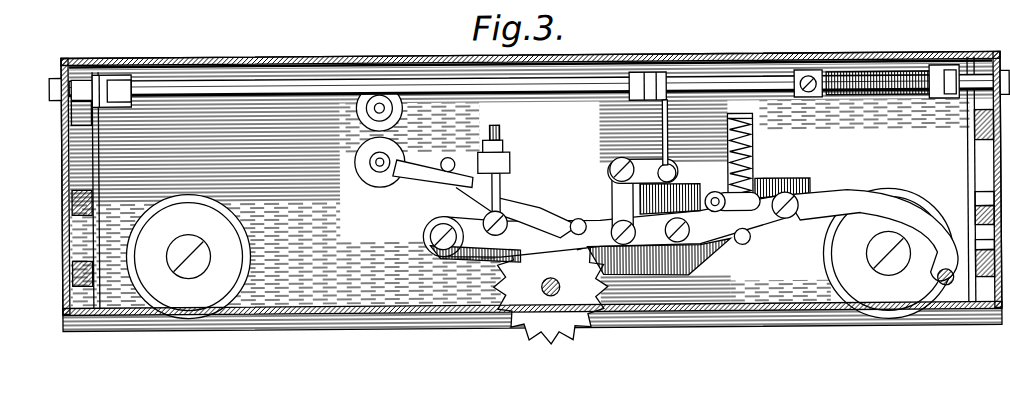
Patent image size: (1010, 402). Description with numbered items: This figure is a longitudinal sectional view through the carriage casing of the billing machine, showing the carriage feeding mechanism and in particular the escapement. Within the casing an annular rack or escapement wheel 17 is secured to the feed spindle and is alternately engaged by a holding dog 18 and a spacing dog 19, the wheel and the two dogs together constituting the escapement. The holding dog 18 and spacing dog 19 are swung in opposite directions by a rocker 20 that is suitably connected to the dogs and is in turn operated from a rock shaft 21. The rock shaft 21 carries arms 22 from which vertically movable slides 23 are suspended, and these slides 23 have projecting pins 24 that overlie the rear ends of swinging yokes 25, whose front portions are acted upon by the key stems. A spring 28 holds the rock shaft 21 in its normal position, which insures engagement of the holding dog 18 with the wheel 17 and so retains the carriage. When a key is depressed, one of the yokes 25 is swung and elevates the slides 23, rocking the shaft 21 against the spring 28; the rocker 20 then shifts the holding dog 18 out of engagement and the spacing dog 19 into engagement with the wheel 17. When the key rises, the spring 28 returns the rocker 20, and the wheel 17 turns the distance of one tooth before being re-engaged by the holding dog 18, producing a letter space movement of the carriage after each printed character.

The escapement wheel 17 is at (550, 286).
The holding dog 18 is at (658, 247).
The spacing dog 19 is at (463, 224).
The rocker 20 is at (512, 160).
The rock shaft 21 is at (732, 84).
The arms 22 is at (104, 106).
The slides 23 is at (96, 170).
The pins 24 is at (70, 208).
The yokes 25 is at (68, 234).
The spring 28 is at (878, 74).